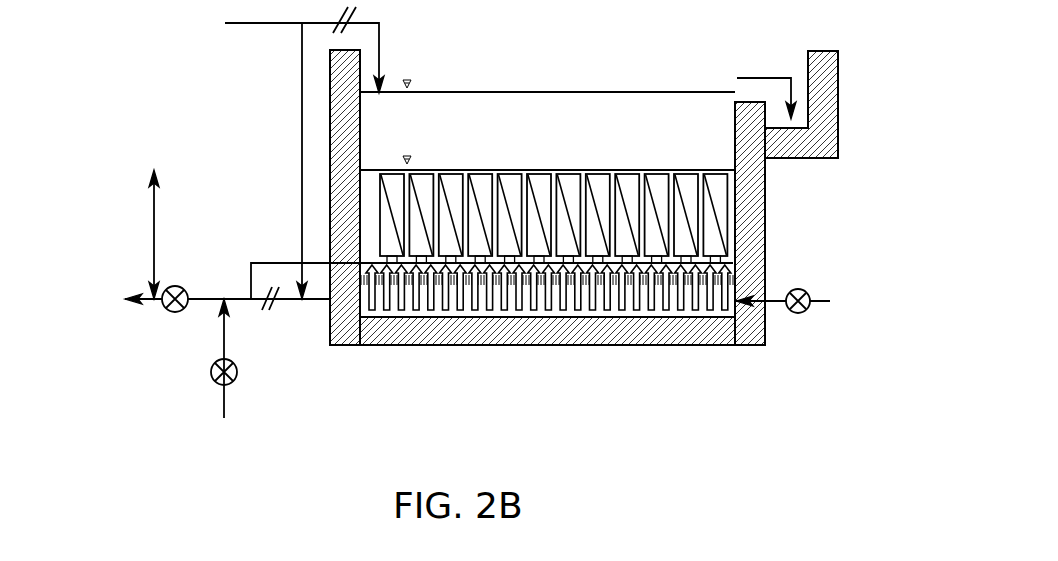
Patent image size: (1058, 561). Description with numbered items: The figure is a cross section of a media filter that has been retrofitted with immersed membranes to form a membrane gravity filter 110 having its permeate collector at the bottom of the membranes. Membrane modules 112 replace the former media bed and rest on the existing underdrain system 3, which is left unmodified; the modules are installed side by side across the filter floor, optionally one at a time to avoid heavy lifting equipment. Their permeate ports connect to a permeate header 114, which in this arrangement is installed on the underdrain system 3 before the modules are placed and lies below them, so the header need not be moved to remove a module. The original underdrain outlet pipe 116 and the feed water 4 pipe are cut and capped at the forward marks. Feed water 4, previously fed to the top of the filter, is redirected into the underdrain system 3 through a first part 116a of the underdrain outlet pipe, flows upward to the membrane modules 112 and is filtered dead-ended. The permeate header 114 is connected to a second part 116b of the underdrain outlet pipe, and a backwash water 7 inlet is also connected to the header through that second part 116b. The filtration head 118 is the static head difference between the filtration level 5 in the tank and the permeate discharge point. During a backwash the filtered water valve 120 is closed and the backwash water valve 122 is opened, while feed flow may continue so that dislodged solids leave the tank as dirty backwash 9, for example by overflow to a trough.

The membrane gravity filter 110 is at (236, 116).
The membrane modules 112 is at (730, 192).
The filtration level 5 is at (660, 170).
The underdrain system 3 is at (718, 262).
The feed water 4 is at (300, 154).
The dirty backwash 9 is at (775, 77).
The permeate header 114 is at (268, 262).
The underdrain outlet pipe 116 is at (285, 304).
The first part of the underdrain outlet pipe 116a is at (316, 303).
The second part of the underdrain outlet pipe 116b is at (208, 298).
The filtered water valve 120 is at (165, 310).
The filtration head 118 is at (152, 238).
The backwash water valve 122 is at (211, 372).
The backwash water 7 is at (222, 410).